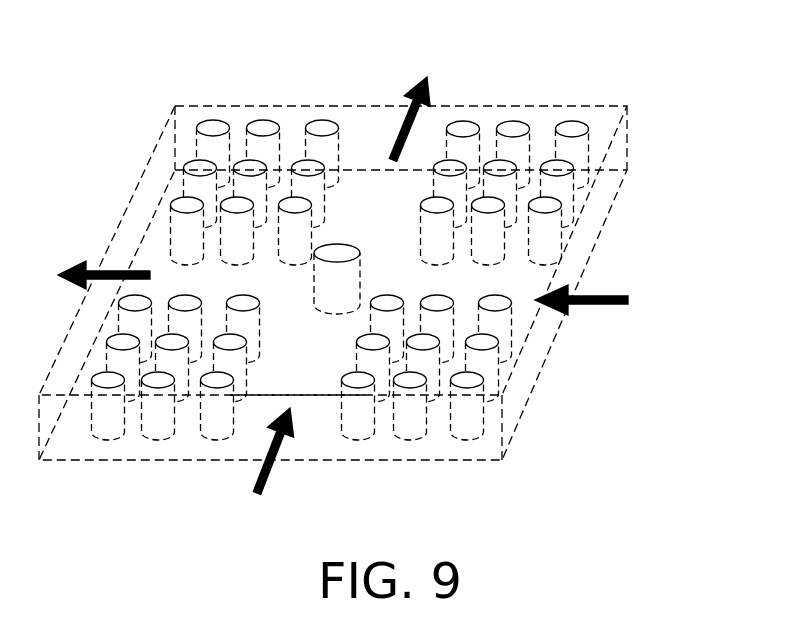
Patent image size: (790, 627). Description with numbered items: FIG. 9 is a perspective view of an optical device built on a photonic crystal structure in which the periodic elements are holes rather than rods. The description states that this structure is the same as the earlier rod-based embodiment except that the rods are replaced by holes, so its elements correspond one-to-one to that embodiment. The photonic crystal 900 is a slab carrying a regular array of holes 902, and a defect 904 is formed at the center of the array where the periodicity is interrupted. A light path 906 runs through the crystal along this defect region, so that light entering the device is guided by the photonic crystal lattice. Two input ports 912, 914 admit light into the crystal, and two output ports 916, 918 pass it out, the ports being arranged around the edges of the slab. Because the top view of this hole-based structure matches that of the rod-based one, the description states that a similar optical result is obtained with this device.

The substrate 900 is at (614, 156).
The pillar 902 is at (589, 124).
The central pillar 904 is at (342, 243).
The top surface of substrate 906 is at (300, 379).
The flow direction arrow 912 is at (271, 470).
The flow direction arrow 914 is at (611, 297).
The flow direction arrow 916 is at (392, 152).
The flow direction arrow 918 is at (104, 271).